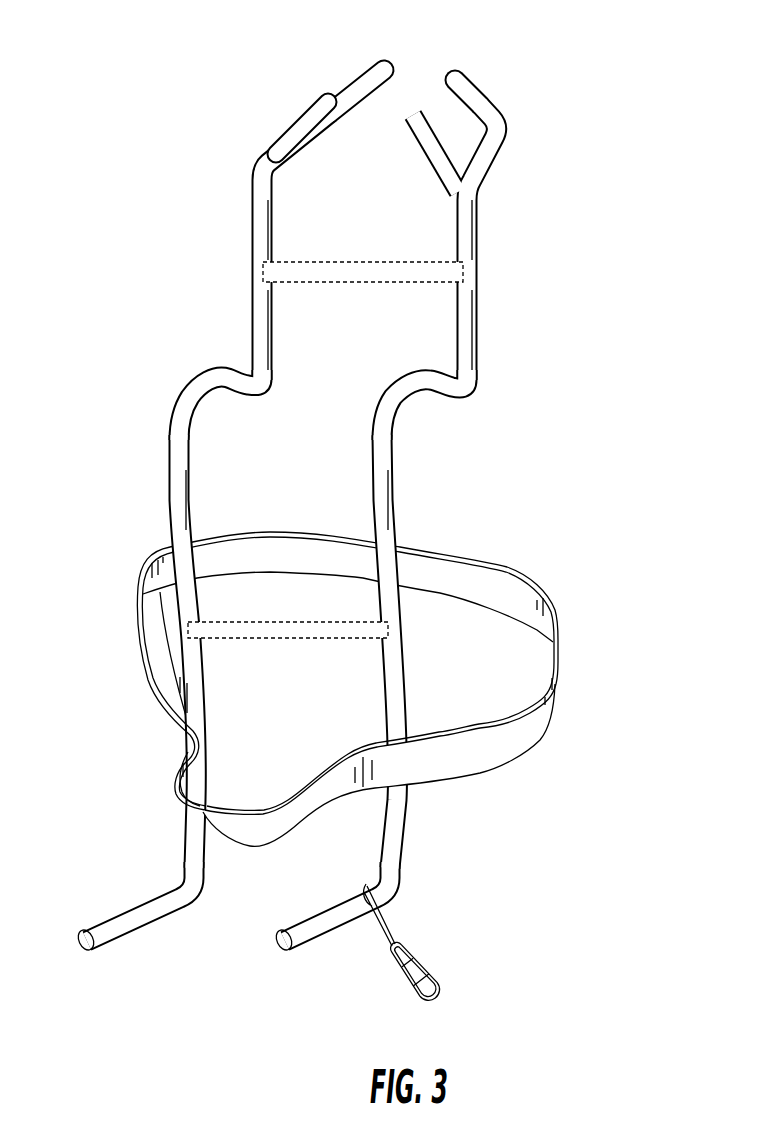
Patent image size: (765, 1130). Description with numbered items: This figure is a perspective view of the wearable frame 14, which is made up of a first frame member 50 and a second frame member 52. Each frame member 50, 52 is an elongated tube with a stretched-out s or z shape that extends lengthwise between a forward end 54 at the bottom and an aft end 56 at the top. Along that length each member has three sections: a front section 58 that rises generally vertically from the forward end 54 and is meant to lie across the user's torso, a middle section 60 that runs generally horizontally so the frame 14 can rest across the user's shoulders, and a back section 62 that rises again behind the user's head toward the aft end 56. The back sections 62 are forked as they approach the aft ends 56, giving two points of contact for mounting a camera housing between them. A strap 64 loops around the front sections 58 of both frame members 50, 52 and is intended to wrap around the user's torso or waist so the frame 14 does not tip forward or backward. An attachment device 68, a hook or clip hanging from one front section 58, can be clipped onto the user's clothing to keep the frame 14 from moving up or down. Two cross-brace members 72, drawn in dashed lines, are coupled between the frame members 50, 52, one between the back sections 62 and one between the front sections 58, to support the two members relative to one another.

The frame 14 is at (98, 238).
The first frame member 50 is at (500, 327).
The second frame member 52 is at (207, 350).
The forward end 54 is at (143, 913).
The aft end 56 is at (388, 62).
The front section 58 is at (178, 514).
The middle section 60 is at (212, 380).
The back section 62 is at (253, 213).
The strap 64 is at (556, 692).
The attachment device 68 is at (432, 968).
The cross-brace member 72 is at (362, 262).